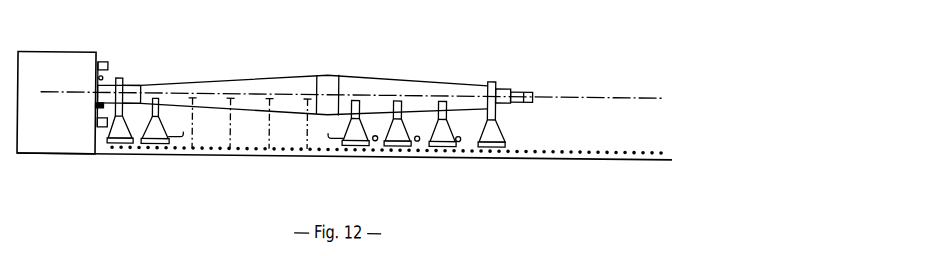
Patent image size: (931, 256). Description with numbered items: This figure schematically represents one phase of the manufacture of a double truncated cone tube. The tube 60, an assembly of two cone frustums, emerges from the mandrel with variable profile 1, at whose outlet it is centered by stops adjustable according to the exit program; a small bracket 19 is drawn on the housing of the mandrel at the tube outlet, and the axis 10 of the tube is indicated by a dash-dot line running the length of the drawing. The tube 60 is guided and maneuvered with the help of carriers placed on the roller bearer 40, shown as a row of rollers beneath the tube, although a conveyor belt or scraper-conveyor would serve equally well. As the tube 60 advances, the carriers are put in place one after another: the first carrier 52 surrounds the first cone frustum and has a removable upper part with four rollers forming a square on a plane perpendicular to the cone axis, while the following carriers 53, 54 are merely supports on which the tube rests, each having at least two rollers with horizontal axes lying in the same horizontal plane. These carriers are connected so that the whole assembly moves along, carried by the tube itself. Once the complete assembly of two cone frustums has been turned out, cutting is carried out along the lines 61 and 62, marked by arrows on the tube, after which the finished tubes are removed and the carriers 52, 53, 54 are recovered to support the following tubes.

The mandrel with variable profile 1 is at (97, 52).
The axis of the body 10 is at (572, 91).
The support bracket 19 is at (95, 105).
The roller bearer 40 is at (589, 143).
The first carrier 52 is at (118, 130).
The carrier 53 is at (442, 131).
The carrier 54 is at (397, 131).
The tube 60 is at (410, 87).
The cutting line 61 is at (131, 80).
The cutting line 62 is at (327, 70).